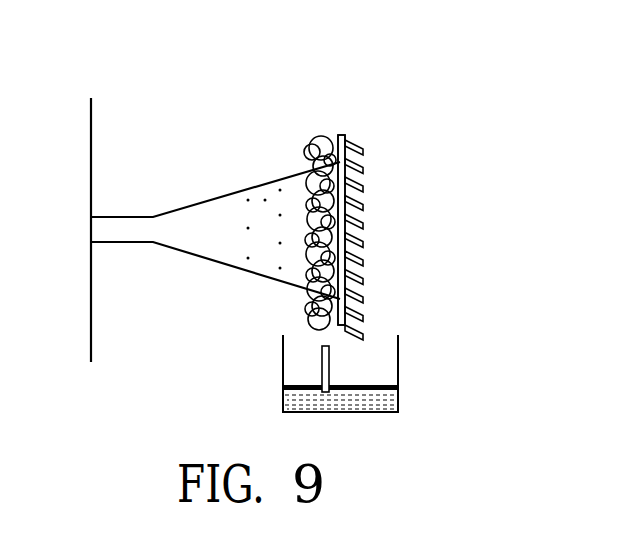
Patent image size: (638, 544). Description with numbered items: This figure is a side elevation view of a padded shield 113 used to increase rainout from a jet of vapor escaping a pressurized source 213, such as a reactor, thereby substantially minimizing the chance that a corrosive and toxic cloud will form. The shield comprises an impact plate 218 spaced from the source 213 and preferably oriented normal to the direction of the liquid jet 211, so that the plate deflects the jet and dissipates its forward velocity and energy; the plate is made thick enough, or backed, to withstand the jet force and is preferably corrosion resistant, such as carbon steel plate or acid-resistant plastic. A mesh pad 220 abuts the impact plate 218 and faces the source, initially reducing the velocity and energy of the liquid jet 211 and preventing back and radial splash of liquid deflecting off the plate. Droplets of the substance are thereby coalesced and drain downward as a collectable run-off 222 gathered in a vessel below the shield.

The padded shield 113 is at (372, 195).
The liquid jet 211 is at (268, 283).
The pressurized source 213 is at (91, 146).
The impact plate 218 is at (351, 141).
The mesh pad 220 is at (325, 130).
The collectable run-off 222 is at (322, 372).